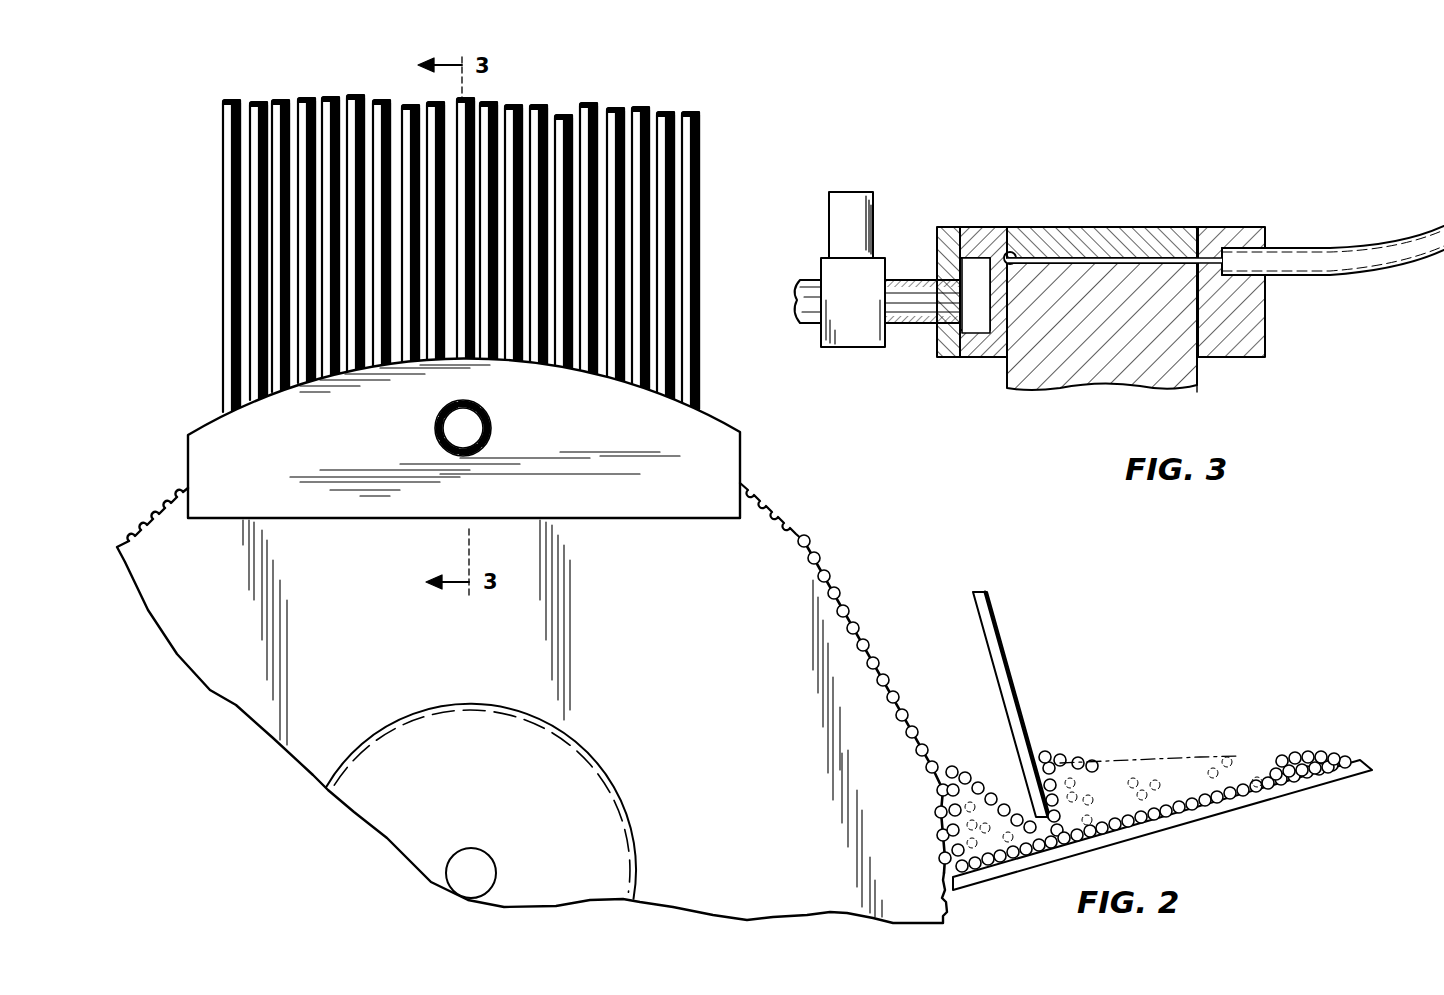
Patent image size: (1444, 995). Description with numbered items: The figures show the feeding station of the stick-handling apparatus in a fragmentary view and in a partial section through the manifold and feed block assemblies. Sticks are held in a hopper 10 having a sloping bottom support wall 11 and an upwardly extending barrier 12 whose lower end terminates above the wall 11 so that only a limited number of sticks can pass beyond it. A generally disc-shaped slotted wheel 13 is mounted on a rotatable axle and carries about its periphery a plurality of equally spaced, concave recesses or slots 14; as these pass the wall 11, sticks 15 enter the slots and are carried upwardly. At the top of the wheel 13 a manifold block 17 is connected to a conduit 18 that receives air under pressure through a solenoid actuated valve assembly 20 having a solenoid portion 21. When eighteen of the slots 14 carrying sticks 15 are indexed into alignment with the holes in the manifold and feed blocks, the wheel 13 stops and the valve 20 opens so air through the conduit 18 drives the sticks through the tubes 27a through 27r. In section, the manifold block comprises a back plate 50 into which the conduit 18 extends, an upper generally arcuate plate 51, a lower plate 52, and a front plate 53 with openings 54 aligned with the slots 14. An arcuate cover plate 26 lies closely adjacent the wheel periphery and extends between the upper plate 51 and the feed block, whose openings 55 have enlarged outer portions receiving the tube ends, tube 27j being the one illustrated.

In FIG. 2, the hopper 10 is at (1157, 733).
In FIG. 2, the sloping bottom support wall 11 is at (1230, 813).
In FIG. 2, the upwardly extending barrier 12 is at (1000, 632).
In FIG. 2, the disc-shaped member 13 is at (855, 593).
In FIG. 3, the disc-shaped member 13 is at (1200, 388).
In FIG. 2, the recesses or slots 14 is at (497, 858).
In FIG. 2, the sticks 15 is at (833, 567).
In FIG. 3, the sticks 15 is at (1133, 258).
In FIG. 3, the manifold block 17 is at (978, 276).
In FIG. 2, the conduit 18 is at (491, 430).
In FIG. 3, the conduit 18 is at (808, 326).
In FIG. 3, the solenoid actuated valve assembly 20 is at (821, 270).
In FIG. 3, the solenoid portion 21 is at (829, 218).
In FIG. 3, the arcuate cover plate 26 is at (1085, 227).
In FIG. 2, the tube 27a is at (700, 180).
In FIG. 2, the tube 27j is at (466, 99).
In FIG. 3, the tube 27j is at (1353, 275).
In FIG. 2, the tube 27r is at (223, 230).
In FIG. 3, the back plate 50 is at (947, 227).
In FIG. 3, the upper arcuate plate 51 is at (990, 227).
In FIG. 3, the lower plate 52 is at (968, 357).
In FIG. 3, the front plate 53 is at (945, 323).
In FIG. 3, the openings 54 is at (1013, 264).
In FIG. 3, the openings 55 is at (1210, 265).